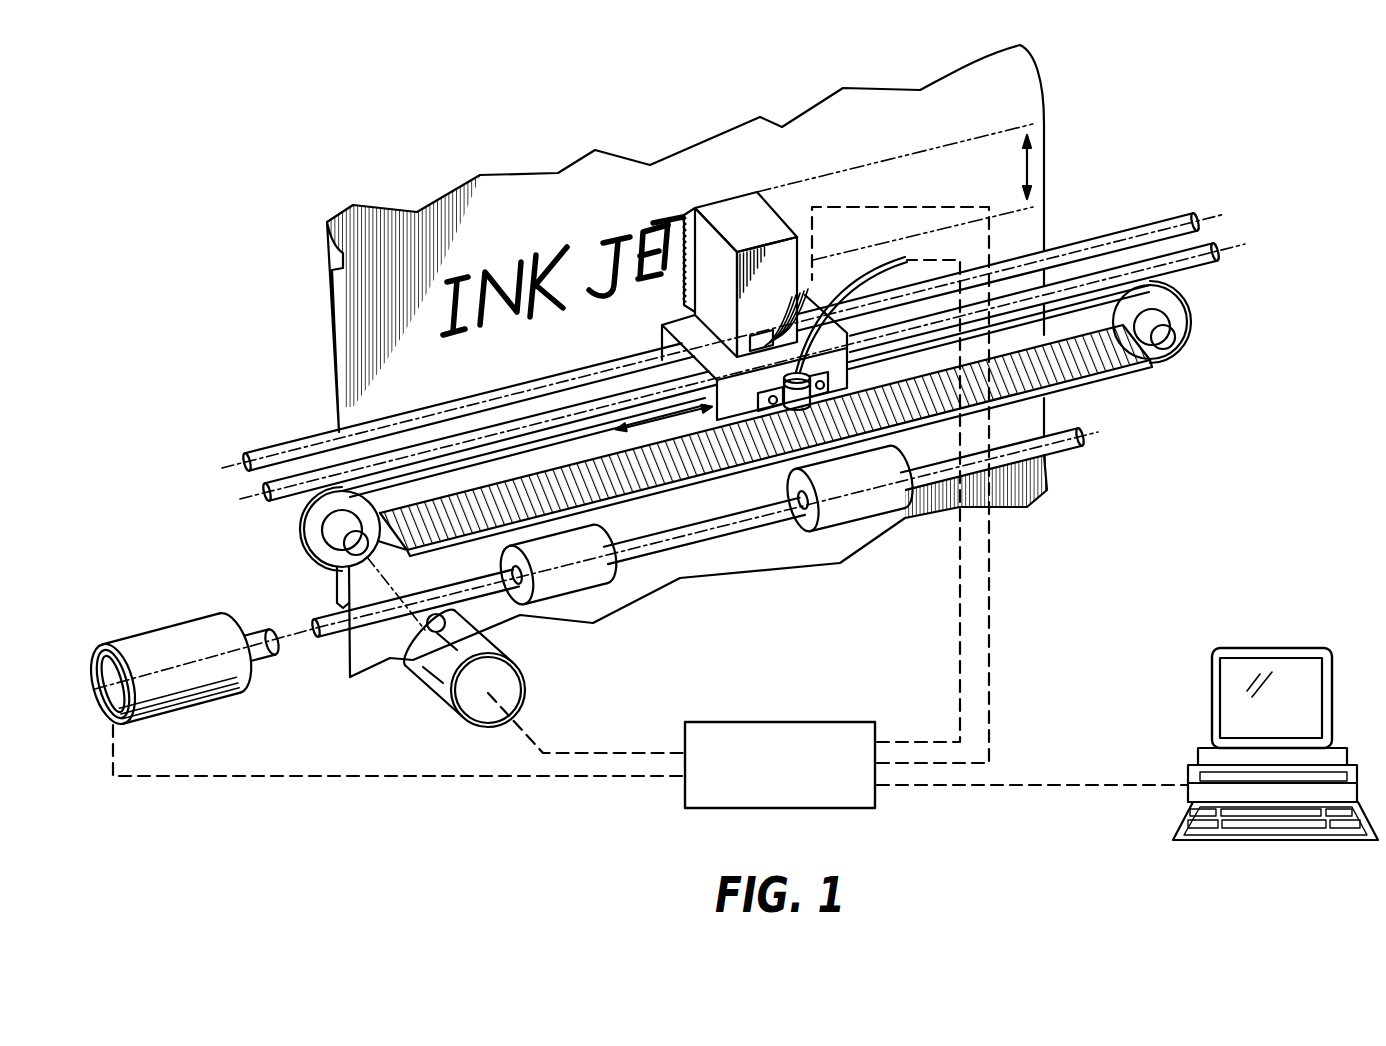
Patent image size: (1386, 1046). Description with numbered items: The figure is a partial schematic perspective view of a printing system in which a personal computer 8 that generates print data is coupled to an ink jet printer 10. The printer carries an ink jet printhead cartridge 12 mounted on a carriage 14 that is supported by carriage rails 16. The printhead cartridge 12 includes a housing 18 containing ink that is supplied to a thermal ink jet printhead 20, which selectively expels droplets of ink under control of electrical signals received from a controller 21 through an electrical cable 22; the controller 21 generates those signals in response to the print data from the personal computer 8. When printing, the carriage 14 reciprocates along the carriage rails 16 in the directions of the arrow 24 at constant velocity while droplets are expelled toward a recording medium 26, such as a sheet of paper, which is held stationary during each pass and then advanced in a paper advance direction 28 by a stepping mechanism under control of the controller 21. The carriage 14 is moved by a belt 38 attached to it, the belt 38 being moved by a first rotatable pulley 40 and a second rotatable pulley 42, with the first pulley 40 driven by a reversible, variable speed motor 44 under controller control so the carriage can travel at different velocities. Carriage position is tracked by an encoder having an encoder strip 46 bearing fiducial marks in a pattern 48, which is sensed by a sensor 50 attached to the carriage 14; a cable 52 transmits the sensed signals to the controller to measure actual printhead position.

The personal computer 8 is at (1268, 645).
The ink jet printer 10 is at (408, 155).
The ink jet printhead cartridge 12 is at (772, 216).
The carriage 14 is at (663, 317).
The carriage rails 16 is at (480, 430).
The housing 18 is at (733, 203).
The thermal ink jet printhead 20 is at (684, 220).
The controller 21 is at (780, 722).
The electrical cable 22 is at (813, 290).
The arrow (scanning direction) 24 is at (673, 423).
The recording medium 26 is at (500, 203).
The paper advance direction 28 is at (1027, 168).
The belt 38 is at (300, 530).
The first rotatable pulley 40 is at (323, 553).
The second rotatable pulley 42 is at (1183, 328).
The reversible motor 44 is at (523, 666).
The encoder strip 46 is at (1127, 377).
The pattern 48 is at (1077, 363).
The sensor 50 is at (793, 418).
The cable 52 is at (907, 260).